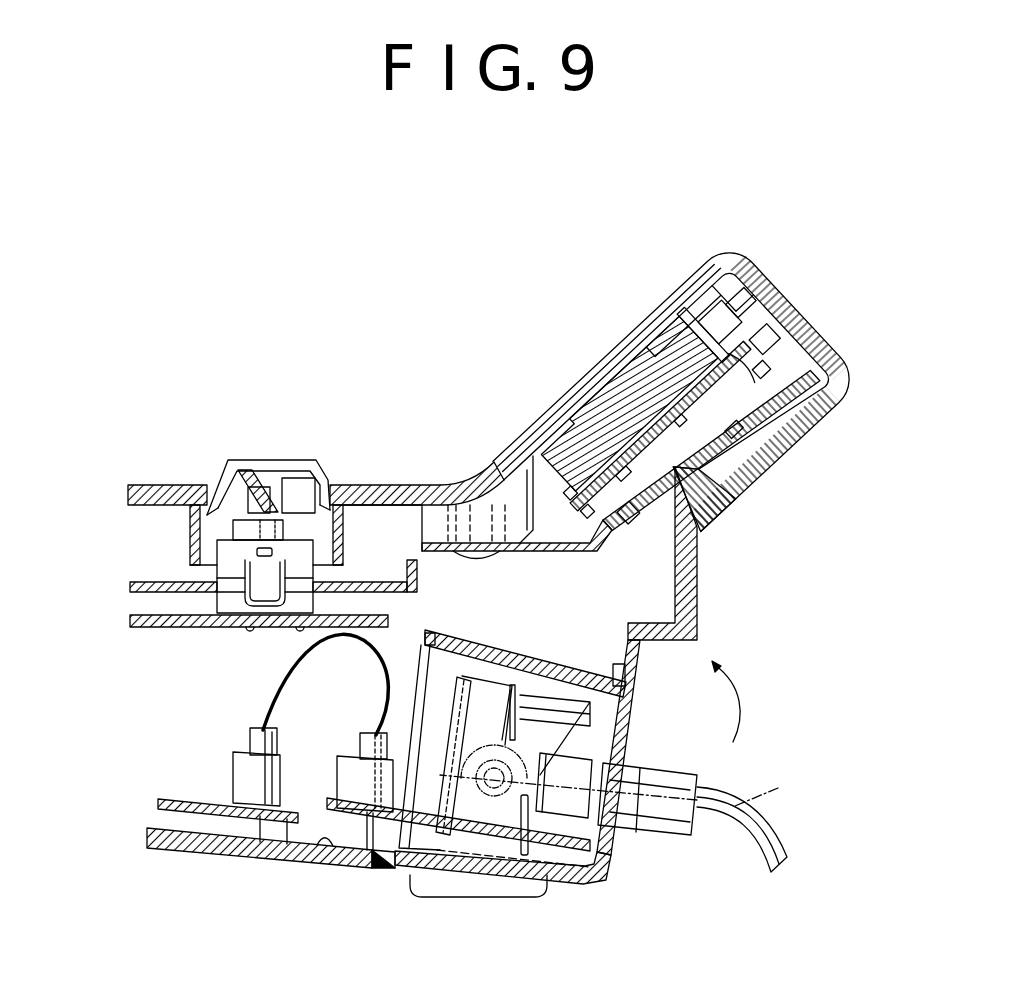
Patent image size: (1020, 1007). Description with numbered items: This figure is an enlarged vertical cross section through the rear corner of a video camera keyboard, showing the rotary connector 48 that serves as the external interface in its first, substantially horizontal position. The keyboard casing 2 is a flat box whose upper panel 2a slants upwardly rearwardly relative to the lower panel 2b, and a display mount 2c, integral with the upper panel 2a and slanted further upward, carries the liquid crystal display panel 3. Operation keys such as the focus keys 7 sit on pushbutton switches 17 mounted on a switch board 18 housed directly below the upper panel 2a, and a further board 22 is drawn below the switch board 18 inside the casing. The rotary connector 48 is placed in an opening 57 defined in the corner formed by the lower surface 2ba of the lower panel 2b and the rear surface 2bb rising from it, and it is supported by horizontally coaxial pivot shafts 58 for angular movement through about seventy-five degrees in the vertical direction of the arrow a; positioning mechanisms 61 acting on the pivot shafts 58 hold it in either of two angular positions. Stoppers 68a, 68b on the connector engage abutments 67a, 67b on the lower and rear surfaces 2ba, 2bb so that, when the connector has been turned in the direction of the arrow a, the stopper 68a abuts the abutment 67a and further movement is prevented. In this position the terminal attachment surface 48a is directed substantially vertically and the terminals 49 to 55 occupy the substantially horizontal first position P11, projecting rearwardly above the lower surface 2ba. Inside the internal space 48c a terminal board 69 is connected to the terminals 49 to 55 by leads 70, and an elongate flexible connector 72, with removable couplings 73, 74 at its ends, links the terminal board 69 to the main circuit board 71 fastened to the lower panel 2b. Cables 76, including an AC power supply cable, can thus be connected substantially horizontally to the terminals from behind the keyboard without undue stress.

The keyboard casing 2 is at (494, 449).
The upper panel 2a is at (152, 485).
The lower panel 2b is at (270, 880).
The lower surface 2ba is at (243, 866).
The rear surface 2bb is at (650, 658).
The display mount 2c is at (675, 423).
The liquid crystal display panel 3 is at (653, 381).
The focus keys 7 is at (260, 461).
The pushbutton switches 17 is at (257, 572).
The switch board 18 is at (142, 616).
The substrate 22 is at (150, 582).
The rotary connector 48 is at (602, 763).
The terminal attachment surface 48a is at (630, 737).
The internal space 48c is at (610, 856).
The terminals 49 is at (612, 845).
The terminals 55 is at (668, 842).
The opening 57 is at (642, 685).
The pivot shafts 58 is at (660, 425).
The positioning mechanisms 61 is at (483, 728).
The abutment 67a is at (323, 846).
The abutment 67b is at (620, 672).
The stopper 68a is at (368, 866).
The stopper 68b is at (420, 650).
The terminal board 69 is at (461, 872).
The leads 70 is at (535, 875).
The main circuit board 71 is at (328, 876).
The flexible connector 72 is at (280, 690).
The removable coupling 73 is at (343, 770).
The removable coupling 74 is at (240, 770).
The cables 76 is at (756, 848).
The arrow a is at (742, 706).
The first position P11 is at (780, 787).